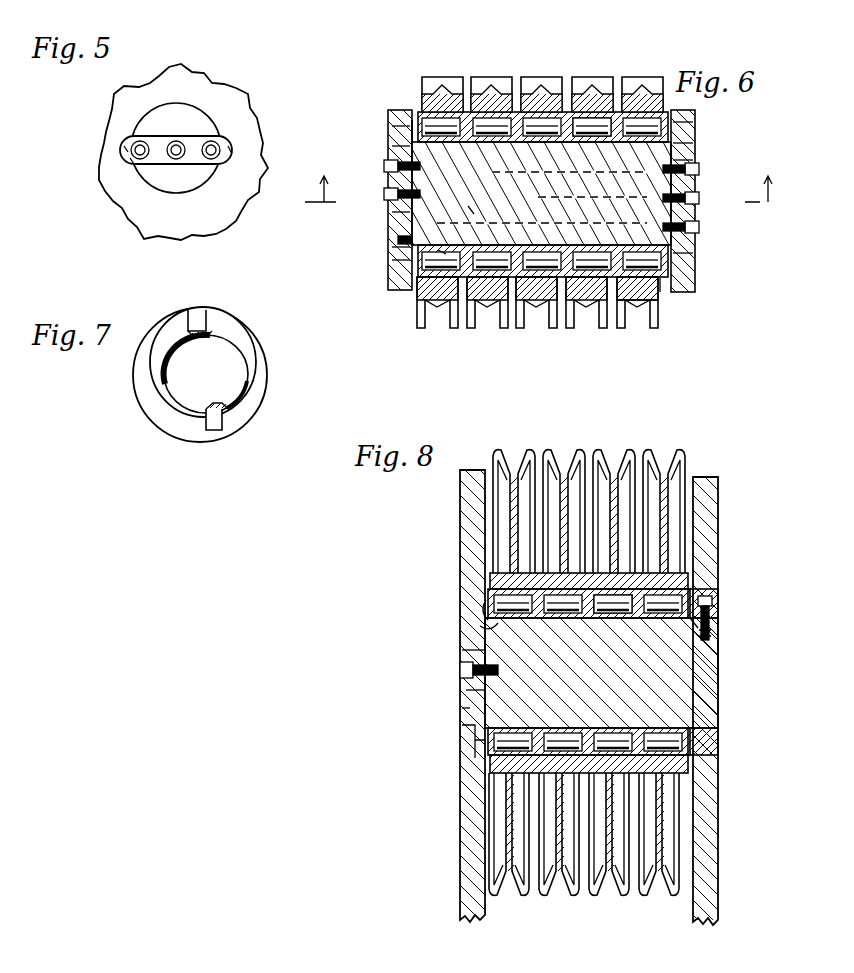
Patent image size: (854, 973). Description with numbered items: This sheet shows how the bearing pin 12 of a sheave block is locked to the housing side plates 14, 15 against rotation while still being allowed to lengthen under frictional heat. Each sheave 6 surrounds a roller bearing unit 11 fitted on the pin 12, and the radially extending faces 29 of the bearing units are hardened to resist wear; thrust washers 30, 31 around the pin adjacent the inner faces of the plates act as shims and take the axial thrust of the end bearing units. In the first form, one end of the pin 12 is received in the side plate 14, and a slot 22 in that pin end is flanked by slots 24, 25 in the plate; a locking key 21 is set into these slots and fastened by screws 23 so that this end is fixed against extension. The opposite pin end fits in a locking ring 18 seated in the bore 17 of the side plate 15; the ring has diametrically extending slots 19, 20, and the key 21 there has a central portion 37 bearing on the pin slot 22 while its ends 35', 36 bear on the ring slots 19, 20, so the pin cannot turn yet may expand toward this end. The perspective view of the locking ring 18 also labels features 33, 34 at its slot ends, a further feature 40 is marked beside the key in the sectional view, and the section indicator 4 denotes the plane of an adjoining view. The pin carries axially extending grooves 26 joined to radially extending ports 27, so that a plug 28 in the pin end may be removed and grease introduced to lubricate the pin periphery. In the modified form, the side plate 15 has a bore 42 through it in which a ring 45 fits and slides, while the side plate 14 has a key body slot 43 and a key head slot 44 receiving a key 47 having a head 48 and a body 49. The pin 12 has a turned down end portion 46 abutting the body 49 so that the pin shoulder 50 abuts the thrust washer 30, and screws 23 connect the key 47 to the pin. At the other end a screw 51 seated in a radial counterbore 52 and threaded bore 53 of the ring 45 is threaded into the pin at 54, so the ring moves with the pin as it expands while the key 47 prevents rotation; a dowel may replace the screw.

In FIG. 6, the section line 4- 4 is at (539, 175).
In FIG. 6, the sheave 6 is at (628, 330).
In FIG. 8, the sheave 6 is at (677, 456).
In FIG. 6, the roller bearing unit 11 is at (641, 306).
In FIG. 8, the roller bearing unit 11 is at (668, 585).
In FIG. 5, the bearing pin 12 is at (166, 186).
In FIG. 6, the bearing pin 12 is at (541, 193).
In FIG. 8, the bearing pin 12 is at (708, 672).
In FIG. 5, the side plate 14 is at (198, 229).
In FIG. 6, the side plate 14 is at (392, 112).
In FIG. 8, the side plate 14 is at (460, 541).
In FIG. 6, the side plate 15 is at (697, 277).
In FIG. 8, the side plate 15 is at (718, 536).
In FIG. 6, the bore 17 is at (697, 125).
In FIG. 7, the locking ring 18 is at (250, 340).
In FIG. 6, the locking ring 18 is at (697, 150).
In FIG. 6, the slot 19 is at (697, 241).
In FIG. 6, the slot 20 is at (697, 161).
In FIG. 5, the locking key 21 is at (157, 150).
In FIG. 6, the locking key 21 is at (388, 205).
In FIG. 5, the slot 22 is at (199, 136).
In FIG. 5, the screws 23 is at (209, 160).
In FIG. 6, the screws 23 is at (699, 223).
In FIG. 8, the screws 23 is at (460, 670).
In FIG. 5, the slot 24 is at (131, 160).
In FIG. 6, the slot 24 is at (388, 129).
In FIG. 5, the slot 25 is at (222, 150).
In FIG. 6, the slot 25 is at (388, 261).
In FIG. 6, the axially extending grooves 26 is at (470, 208).
In FIG. 6, the radially extending ports 27 is at (448, 252).
In FIG. 6, the plug 28 is at (398, 240).
In FIG. 6, the radially extending faces 29 is at (604, 142).
In FIG. 8, the radially extending faces 29 is at (630, 618).
In FIG. 6, the thrust washer 30 is at (415, 120).
In FIG. 8, the thrust washer 30 is at (488, 580).
In FIG. 6, the thrust washer 31 is at (662, 292).
In FIG. 7, the notch 33 is at (198, 310).
In FIG. 7, the notch 34 is at (212, 430).
In FIG. 5, the key end 35' is at (89, 147).
In FIG. 6, the key end 35' is at (553, 139).
In FIG. 5, the key end 36 is at (232, 152).
In FIG. 6, the key end 36 is at (392, 248).
In FIG. 6, the central portion 37 is at (388, 187).
In FIG. 6, the shoulder 40 is at (382, 216).
In FIG. 8, the bore 42 is at (718, 587).
In FIG. 8, the key body slot 43 is at (462, 750).
In FIG. 8, the key head slot 44 is at (462, 736).
In FIG. 8, the ring 45 is at (712, 749).
In FIG. 8, the turned down end portion 46 is at (484, 616).
In FIG. 8, the key 47 is at (454, 711).
In FIG. 8, the head 48 is at (466, 654).
In FIG. 8, the body 49 is at (470, 694).
In FIG. 8, the pin shoulder 50 is at (488, 628).
In FIG. 8, the screw 51 is at (716, 606).
In FIG. 8, the radial counterbore 52 is at (716, 618).
In FIG. 8, the threaded bore 53 is at (692, 622).
In FIG. 8, the threaded portion of the pin 54 is at (716, 632).